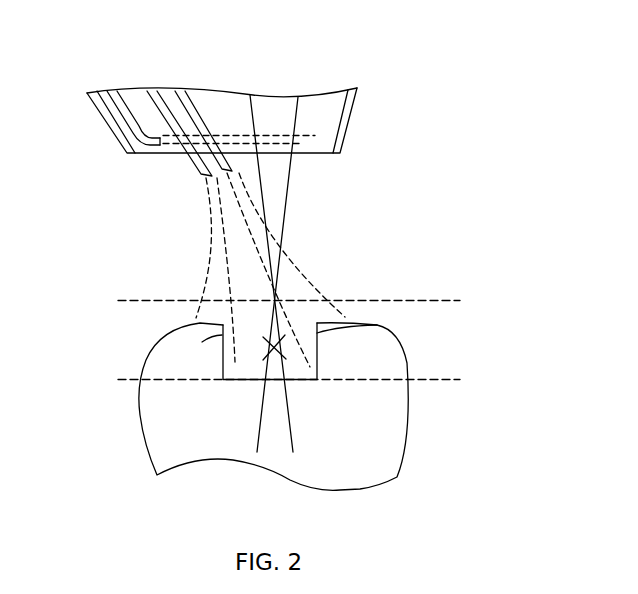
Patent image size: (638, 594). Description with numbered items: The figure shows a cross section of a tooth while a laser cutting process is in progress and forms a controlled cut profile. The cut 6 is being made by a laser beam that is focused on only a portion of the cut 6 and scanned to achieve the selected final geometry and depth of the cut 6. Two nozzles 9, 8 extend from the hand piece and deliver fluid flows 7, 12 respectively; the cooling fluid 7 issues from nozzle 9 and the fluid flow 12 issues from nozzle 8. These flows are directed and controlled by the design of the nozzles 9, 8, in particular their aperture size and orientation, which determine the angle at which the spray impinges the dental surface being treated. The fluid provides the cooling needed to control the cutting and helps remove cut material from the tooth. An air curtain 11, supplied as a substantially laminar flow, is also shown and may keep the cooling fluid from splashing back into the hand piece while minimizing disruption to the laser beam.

The cut 6 is at (317, 362).
The cooling fluid 7 is at (212, 225).
The nozzle 8 is at (193, 110).
The nozzle 9 is at (205, 175).
The air curtain 11 is at (303, 140).
The fluid flow 12 is at (310, 280).